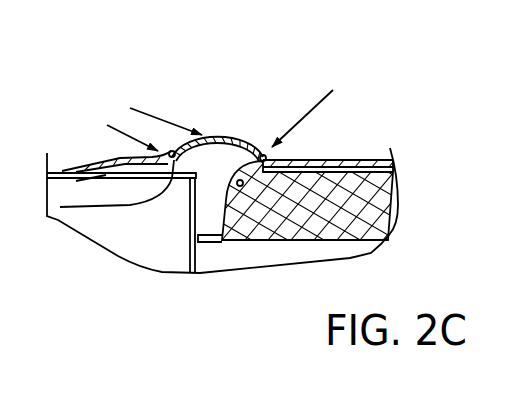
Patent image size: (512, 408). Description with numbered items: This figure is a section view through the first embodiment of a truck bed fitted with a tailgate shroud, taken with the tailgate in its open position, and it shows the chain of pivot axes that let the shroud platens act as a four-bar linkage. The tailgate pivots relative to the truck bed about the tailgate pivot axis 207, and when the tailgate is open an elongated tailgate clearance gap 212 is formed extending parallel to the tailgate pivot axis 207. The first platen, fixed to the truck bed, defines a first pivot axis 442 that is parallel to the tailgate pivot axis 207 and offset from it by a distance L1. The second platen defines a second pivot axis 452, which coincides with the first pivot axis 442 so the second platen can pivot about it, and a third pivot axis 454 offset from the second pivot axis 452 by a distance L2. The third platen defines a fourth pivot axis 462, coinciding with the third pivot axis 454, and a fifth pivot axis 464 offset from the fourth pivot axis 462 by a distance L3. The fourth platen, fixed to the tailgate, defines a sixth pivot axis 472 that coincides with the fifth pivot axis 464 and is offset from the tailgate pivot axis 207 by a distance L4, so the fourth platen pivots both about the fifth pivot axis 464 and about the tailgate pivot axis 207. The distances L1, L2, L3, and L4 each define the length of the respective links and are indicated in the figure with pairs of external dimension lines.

The tailgate pivot axis 207 is at (240, 186).
The tailgate clearance gap 212 is at (190, 212).
The first pivot axis 442 is at (60, 207).
The second pivot axis 452 is at (163, 148).
The third pivot axis 454 is at (210, 130).
The fourth pivot axis 462 is at (229, 122).
The fifth pivot axis 464 is at (287, 152).
The sixth pivot axis 472 is at (312, 128).
The distance L1 is at (244, 185).
The distance L2 is at (227, 133).
The distance L3 is at (270, 163).
The distance L4 is at (212, 177).